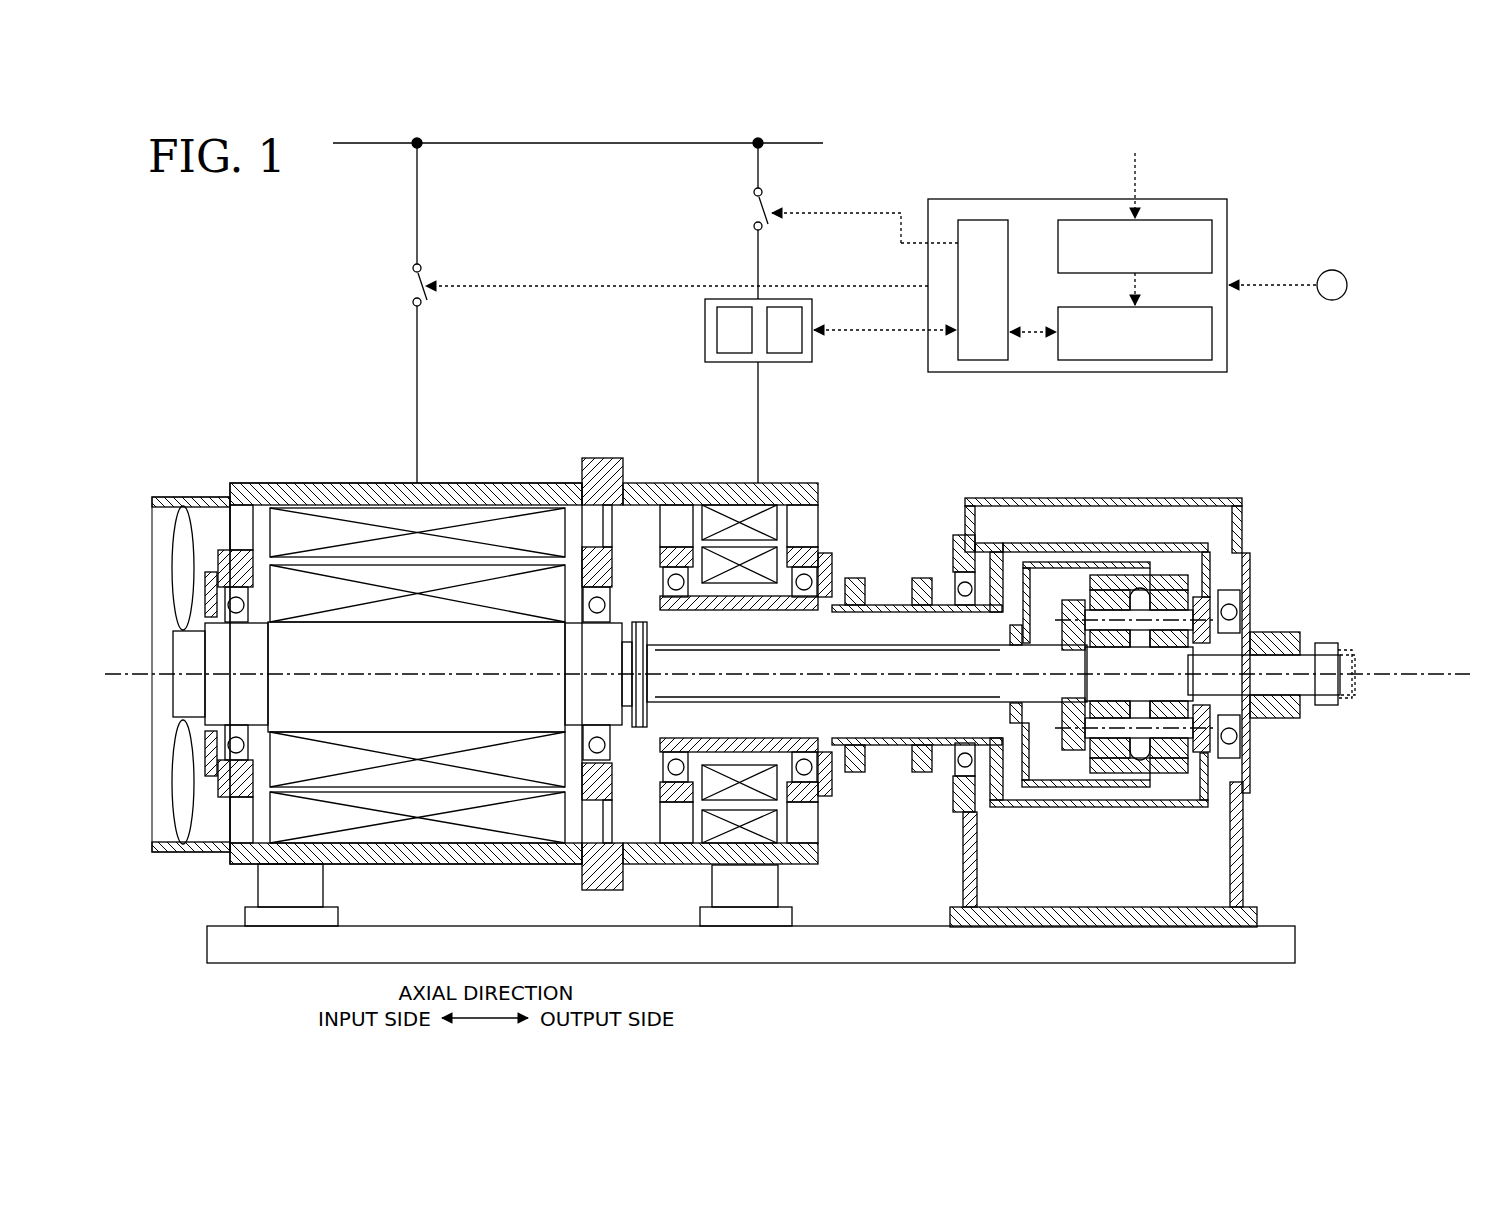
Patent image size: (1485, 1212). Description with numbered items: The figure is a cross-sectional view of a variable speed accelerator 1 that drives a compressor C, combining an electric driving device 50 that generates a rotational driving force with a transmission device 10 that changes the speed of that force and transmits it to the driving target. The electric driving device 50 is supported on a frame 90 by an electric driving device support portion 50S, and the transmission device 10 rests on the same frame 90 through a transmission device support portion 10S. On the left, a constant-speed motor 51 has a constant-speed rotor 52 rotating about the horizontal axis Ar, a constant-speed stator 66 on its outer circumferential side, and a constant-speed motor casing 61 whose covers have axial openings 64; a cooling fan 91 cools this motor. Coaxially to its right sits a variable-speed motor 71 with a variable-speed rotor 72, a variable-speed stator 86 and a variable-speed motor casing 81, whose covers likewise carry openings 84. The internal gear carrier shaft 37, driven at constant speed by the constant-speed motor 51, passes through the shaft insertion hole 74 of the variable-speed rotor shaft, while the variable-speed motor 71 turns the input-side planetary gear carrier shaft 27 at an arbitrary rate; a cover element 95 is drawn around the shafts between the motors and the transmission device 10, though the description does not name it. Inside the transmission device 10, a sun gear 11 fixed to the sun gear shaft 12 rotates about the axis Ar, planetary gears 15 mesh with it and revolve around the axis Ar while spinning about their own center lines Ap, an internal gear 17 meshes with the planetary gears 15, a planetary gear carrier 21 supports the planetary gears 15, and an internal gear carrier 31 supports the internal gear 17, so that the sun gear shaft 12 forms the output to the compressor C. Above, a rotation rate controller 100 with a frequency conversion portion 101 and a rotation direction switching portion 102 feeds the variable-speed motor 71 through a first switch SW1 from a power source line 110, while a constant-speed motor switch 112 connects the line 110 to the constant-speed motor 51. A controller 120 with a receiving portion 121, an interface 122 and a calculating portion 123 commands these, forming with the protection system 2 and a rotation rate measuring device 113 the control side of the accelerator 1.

The variable speed accelerator 1 is at (1318, 185).
The protection system 2 is at (1035, 172).
The transmission device 10 is at (1242, 485).
The transmission device support portion 10S is at (1242, 870).
The sun gear 11 is at (1180, 683).
The sun gear shaft 12 is at (1308, 688).
The planetary gears 15 is at (1183, 603).
The internal gear 17 is at (1165, 572).
The planetary gear carrier 21 is at (1195, 542).
The input-side planetary gear carrier shaft 27 is at (983, 600).
The internal gear carrier 31 is at (1087, 787).
The internal gear carrier shaft 37 is at (993, 690).
The electric driving device 50 is at (238, 476).
The electric driving device support portion 50S is at (318, 877).
The constant-speed motor 51 is at (283, 480).
The constant-speed rotor 52 is at (512, 562).
The constant-speed motor casing 61 is at (458, 496).
The openings 64 is at (240, 522).
The constant-speed stator 66 is at (343, 527).
The variable-speed motor 71 is at (797, 482).
The variable-speed rotor 72 is at (743, 757).
The shaft insertion hole 74 is at (663, 623).
The variable-speed motor casing 81 is at (648, 860).
The openings 84 is at (672, 518).
The variable-speed stator 86 is at (718, 830).
The frame 90 is at (1285, 950).
The cooling fan 91 is at (190, 835).
The shaft cover 95 is at (888, 603).
The rotation rate controller 100 is at (818, 308).
The frequency conversion portion 101 is at (722, 306).
The rotation direction switching portion 102 is at (790, 306).
The power source line 110 is at (598, 160).
The constant-speed motor switch 112 is at (424, 285).
The rotation rate measuring device 113 is at (1348, 285).
The controller 120 is at (1198, 195).
The receiving portion 121 is at (1212, 243).
The interface 122 is at (998, 220).
The calculating portion 123 is at (1212, 330).
The first switch SW1 is at (770, 213).
The center lines of planetary gears Ap is at (1178, 617).
The axis Ar is at (1380, 674).
The compressor C is at (1332, 643).